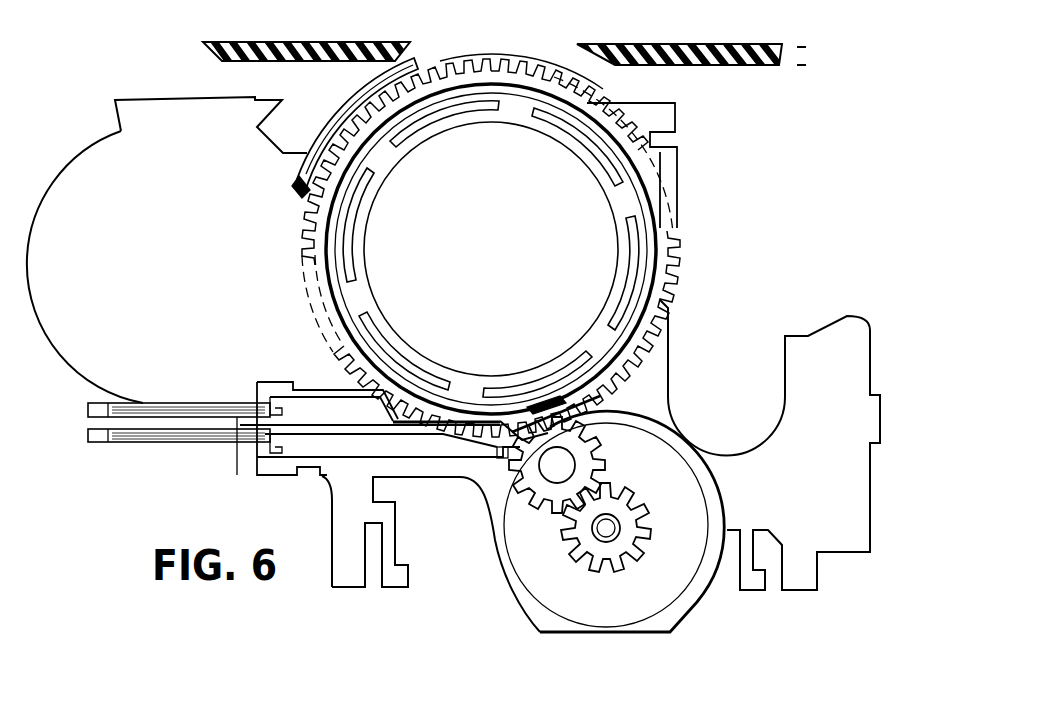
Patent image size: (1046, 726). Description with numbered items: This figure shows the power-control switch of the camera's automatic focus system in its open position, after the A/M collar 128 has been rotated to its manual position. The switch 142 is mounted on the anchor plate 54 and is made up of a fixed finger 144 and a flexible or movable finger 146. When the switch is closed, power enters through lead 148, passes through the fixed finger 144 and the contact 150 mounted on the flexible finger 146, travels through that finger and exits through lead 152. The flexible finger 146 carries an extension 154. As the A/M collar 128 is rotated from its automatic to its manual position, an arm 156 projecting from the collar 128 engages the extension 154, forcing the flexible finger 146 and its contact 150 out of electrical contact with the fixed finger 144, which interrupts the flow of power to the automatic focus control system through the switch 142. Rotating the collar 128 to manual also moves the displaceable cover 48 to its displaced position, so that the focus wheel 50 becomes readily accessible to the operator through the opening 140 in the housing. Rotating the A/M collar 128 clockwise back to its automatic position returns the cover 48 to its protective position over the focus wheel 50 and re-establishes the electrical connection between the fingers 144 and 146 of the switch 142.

The cover 48 is at (346, 101).
The focus wheel 50 is at (303, 194).
The anchor plate 54 is at (656, 372).
The A/M collar 128 is at (672, 133).
The opening 140 is at (541, 61).
The switch 142 is at (222, 455).
The fixed finger 144 is at (430, 418).
The flexible finger 146 is at (460, 450).
The lead 148 is at (97, 404).
The contact 150 is at (497, 452).
The lead 152 is at (97, 442).
The extension 154 is at (594, 400).
The arm 156 is at (526, 404).